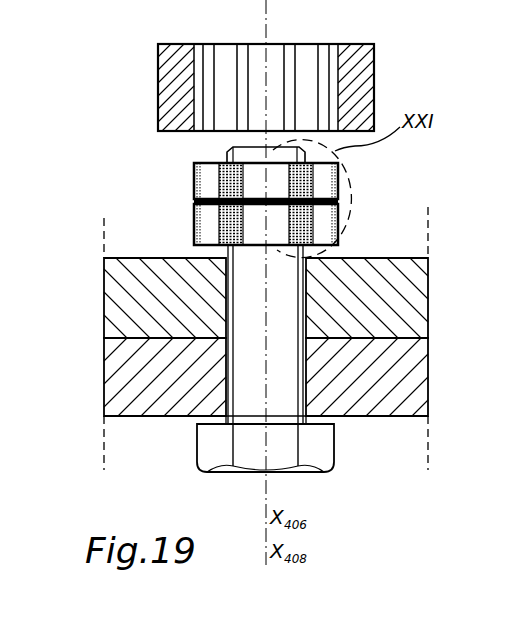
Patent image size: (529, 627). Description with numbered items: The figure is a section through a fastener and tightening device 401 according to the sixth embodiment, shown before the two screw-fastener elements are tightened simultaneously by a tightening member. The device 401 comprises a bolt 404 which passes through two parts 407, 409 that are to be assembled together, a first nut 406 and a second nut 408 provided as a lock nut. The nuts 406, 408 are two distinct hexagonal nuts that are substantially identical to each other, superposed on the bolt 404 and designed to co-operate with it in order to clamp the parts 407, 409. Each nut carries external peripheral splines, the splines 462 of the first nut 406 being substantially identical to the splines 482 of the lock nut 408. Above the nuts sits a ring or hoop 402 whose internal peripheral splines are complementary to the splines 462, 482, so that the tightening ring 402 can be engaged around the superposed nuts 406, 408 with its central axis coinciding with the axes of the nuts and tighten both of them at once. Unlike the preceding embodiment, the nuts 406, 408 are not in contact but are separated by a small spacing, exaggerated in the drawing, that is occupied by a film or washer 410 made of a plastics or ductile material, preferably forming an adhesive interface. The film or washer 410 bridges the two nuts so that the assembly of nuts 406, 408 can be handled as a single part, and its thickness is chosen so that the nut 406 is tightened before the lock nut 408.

The device 401 is at (132, 122).
The tightening ring 402 is at (388, 70).
The bolt 404 is at (342, 461).
The first nut 406 is at (347, 218).
The part 407 is at (403, 372).
The second nut 408 is at (347, 169).
The part 409 is at (407, 303).
The film or washer 410 is at (340, 203).
The external peripheral splines 462 is at (260, 213).
The external peripheral splines 482 is at (207, 180).